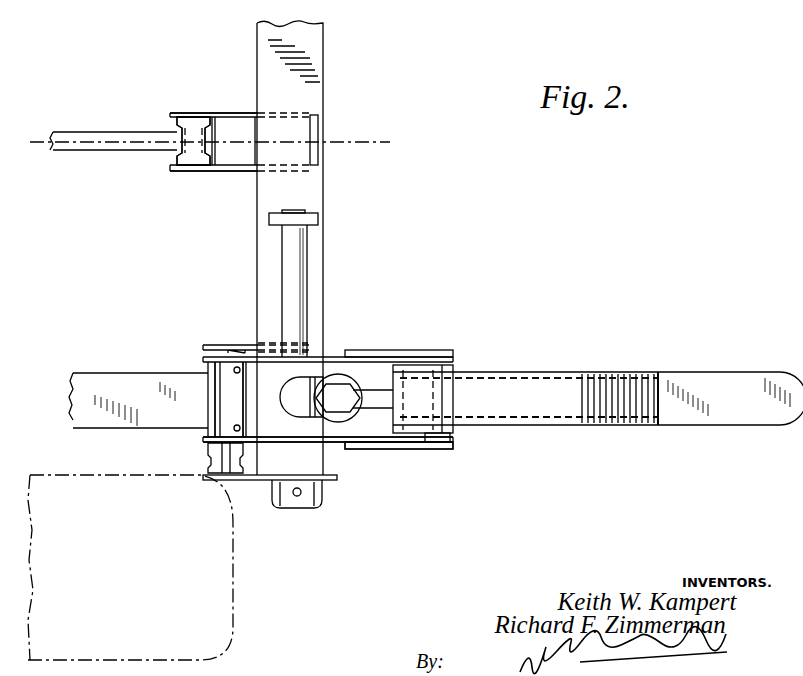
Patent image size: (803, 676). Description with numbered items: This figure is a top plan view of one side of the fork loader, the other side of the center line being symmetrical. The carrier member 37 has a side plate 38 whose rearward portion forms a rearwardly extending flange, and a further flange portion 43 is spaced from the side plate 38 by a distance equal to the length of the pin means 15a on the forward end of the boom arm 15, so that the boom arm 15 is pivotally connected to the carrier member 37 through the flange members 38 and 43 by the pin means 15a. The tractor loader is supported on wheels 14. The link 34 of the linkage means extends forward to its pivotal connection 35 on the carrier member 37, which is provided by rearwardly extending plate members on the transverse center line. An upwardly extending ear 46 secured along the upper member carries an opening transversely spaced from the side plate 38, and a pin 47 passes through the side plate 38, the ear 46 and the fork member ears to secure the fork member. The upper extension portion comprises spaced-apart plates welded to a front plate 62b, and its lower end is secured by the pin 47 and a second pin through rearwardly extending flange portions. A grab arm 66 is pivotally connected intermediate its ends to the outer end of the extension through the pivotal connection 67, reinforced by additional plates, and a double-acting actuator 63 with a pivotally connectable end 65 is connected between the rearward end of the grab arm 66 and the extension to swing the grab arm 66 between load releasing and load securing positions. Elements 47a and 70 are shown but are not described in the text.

The wheels 14 is at (233, 607).
The boom arms 15 is at (138, 365).
The pin means 15a is at (227, 455).
The link 34 is at (88, 130).
The pivotal connection 35 is at (182, 113).
The carrier member 37 is at (332, 69).
The side plates 38 is at (253, 480).
The flange portion 43 is at (223, 345).
The upwardly extending ear 46 is at (318, 215).
The pin 47 is at (305, 253).
The rod end 47a is at (320, 500).
The front plate 62b is at (457, 363).
The double-acting actuator 63 is at (305, 385).
The pivotally connectable end 65 is at (383, 410).
The grab arm 66 is at (685, 378).
The pivotal connection 67 is at (430, 440).
The grip 70 is at (562, 410).